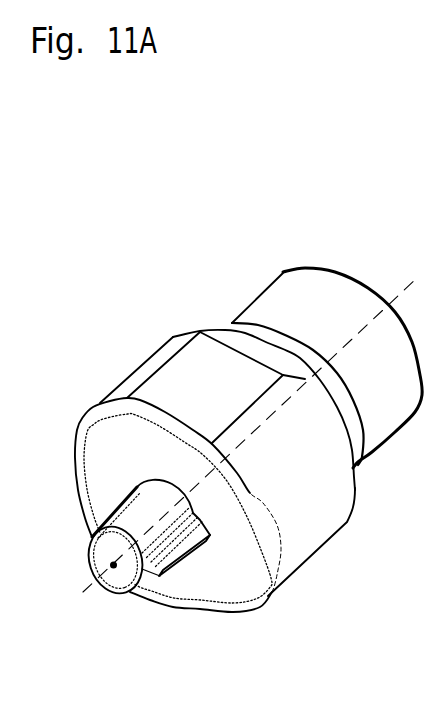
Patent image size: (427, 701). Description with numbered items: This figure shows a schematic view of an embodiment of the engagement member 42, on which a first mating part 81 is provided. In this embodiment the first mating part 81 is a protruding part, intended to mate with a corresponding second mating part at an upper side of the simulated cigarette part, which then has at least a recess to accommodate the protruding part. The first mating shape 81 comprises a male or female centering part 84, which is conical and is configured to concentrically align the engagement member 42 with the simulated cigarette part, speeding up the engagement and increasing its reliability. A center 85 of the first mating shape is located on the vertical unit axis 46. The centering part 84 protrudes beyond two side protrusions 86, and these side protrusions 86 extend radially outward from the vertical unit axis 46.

The engagement member 42 is at (150, 350).
The vertical unit axis 46 is at (400, 292).
The first mating part 81 is at (120, 447).
The centering part 84 is at (114, 577).
The center 85 is at (119, 570).
The side protrusions 86 is at (89, 527).